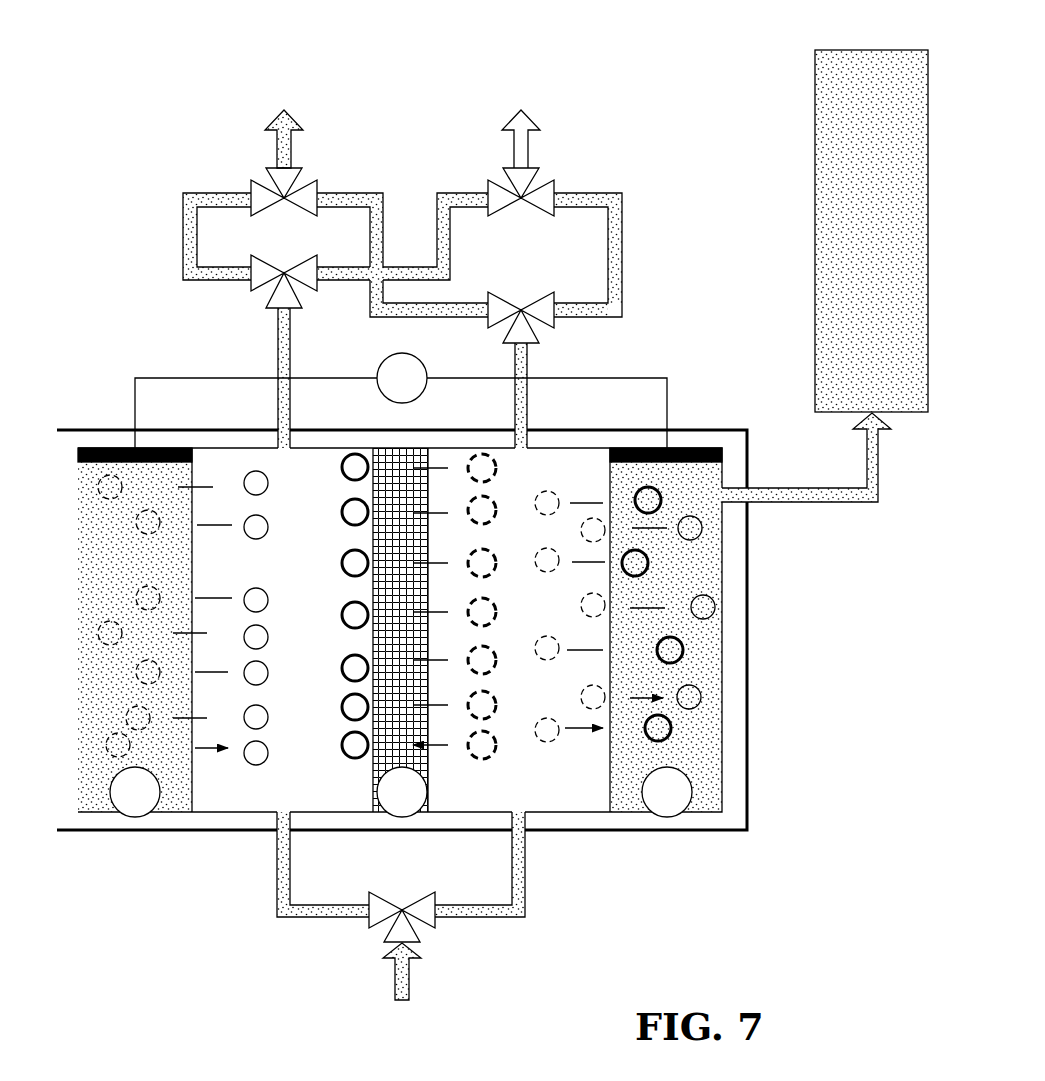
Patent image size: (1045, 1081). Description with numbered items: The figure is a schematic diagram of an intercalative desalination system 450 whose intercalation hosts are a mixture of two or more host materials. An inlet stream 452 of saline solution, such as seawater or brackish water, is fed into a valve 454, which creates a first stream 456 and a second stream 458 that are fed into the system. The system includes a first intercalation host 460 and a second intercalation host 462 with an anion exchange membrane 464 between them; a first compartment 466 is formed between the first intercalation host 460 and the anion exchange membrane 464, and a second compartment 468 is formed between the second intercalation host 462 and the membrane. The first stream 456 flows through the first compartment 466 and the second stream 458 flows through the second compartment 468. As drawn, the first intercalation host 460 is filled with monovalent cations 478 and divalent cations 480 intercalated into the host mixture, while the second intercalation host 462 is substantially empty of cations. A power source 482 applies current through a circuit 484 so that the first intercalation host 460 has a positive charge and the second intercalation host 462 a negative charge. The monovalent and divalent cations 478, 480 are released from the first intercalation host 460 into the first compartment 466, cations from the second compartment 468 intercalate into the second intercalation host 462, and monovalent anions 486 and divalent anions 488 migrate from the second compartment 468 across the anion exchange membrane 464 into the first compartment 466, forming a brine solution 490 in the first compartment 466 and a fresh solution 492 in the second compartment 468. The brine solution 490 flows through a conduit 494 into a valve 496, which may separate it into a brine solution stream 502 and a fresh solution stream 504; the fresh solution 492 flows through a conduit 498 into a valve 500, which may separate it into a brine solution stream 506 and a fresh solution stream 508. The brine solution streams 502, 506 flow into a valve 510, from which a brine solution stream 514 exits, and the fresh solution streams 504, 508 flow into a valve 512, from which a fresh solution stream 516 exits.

The intercalative desalination (IDI) system 450 is at (117, 857).
The inlet stream 452 is at (395, 980).
The valve 454 is at (368, 920).
The first stream 456 is at (277, 857).
The second stream 458 is at (525, 858).
The first intercalation host 460 is at (152, 805).
The second intercalation host 462 is at (684, 805).
The anion exchange membrane 464 is at (419, 805).
The first compartment 466 is at (298, 800).
The second compartment 468 is at (534, 800).
The monovalent cations 478 is at (135, 590).
The divalent cations 480 is at (110, 648).
The power source 482 is at (419, 391).
The circuit 484 is at (193, 377).
The monovalent anions 486 is at (503, 503).
The divalent anions 488 is at (483, 452).
The brine solution 490 is at (317, 481).
The fresh solution 492 is at (574, 481).
The conduit 494 is at (291, 358).
The valve 496 is at (250, 283).
The conduit 498 is at (513, 367).
The valve 500 is at (555, 323).
The brine solution stream 502 is at (183, 235).
The fresh solution stream 504 is at (465, 193).
The brine solution stream 506 is at (457, 303).
The fresh solution stream 508 is at (622, 255).
The valve 510 is at (251, 190).
The valve 512 is at (530, 167).
The brine solution stream 514 is at (275, 140).
The fresh solution stream 516 is at (512, 140).